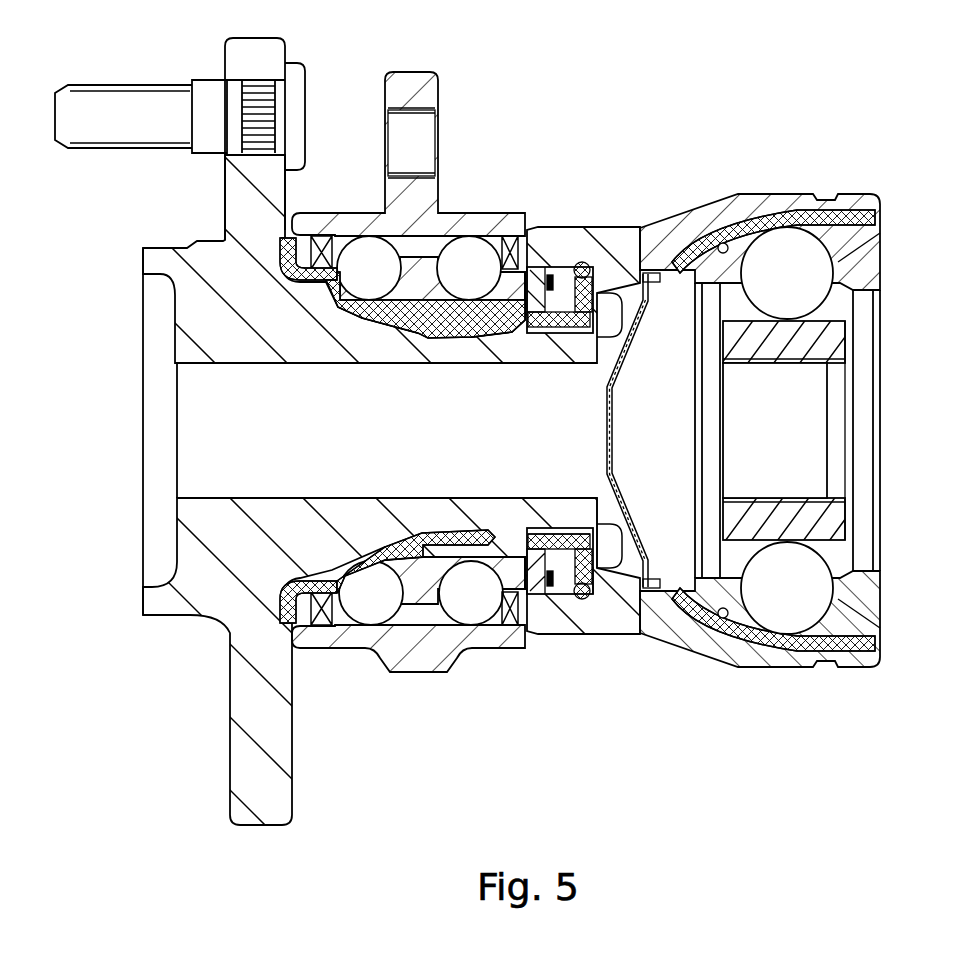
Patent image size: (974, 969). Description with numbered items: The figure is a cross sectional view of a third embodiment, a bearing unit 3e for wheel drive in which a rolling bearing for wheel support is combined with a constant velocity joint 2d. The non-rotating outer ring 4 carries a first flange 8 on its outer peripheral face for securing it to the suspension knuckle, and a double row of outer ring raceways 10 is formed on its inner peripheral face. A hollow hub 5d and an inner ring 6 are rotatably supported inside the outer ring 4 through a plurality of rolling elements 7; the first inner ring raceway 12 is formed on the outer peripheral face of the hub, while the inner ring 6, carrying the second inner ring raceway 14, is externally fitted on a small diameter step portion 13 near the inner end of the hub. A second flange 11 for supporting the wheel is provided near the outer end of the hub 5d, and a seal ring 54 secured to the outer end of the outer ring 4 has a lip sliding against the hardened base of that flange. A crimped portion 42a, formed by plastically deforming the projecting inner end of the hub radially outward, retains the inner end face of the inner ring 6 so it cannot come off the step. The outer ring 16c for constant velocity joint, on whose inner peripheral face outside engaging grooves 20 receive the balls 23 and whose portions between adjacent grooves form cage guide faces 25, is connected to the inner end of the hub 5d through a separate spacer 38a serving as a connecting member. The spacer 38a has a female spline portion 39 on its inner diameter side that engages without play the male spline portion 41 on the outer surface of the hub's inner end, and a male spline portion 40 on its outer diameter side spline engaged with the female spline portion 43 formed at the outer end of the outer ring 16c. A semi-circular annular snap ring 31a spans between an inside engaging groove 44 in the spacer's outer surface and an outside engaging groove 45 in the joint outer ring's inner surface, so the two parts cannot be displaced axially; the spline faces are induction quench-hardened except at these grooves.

The bearing unit for wheel drive 3e is at (545, 125).
The outer ring 4 is at (430, 648).
The hollow hub 5d is at (197, 313).
The inner ring 6 is at (527, 250).
The rolling elements 7 is at (213, 243).
The first flange 8 is at (425, 95).
The outer ring raceways 10 is at (372, 255).
The second flange 11 is at (240, 63).
The first inner ring raceway 12 is at (362, 272).
The small diameter step portion 13 is at (447, 320).
The second inner ring raceway 14 is at (487, 290).
The outer ring for constant velocity joint 16c is at (745, 212).
The outside engaging grooves 20 is at (722, 244).
The balls 23 is at (800, 253).
The cage guide faces 25 is at (880, 296).
The constant velocity joint 2d is at (862, 208).
The snap ring 31a is at (551, 280).
The spacer 38a is at (588, 610).
The inner diameter side female spline portion 39 is at (562, 553).
The outer diameter side male spline portion 40 is at (578, 565).
The inner diameter side male spline portion 41 is at (582, 270).
The crimped portion 42a is at (615, 557).
The outer diameter side female spline portion 43 is at (530, 560).
The inside engaging groove 44 is at (553, 325).
The outside engaging groove 45 is at (570, 575).
The seal ring 54 is at (286, 240).